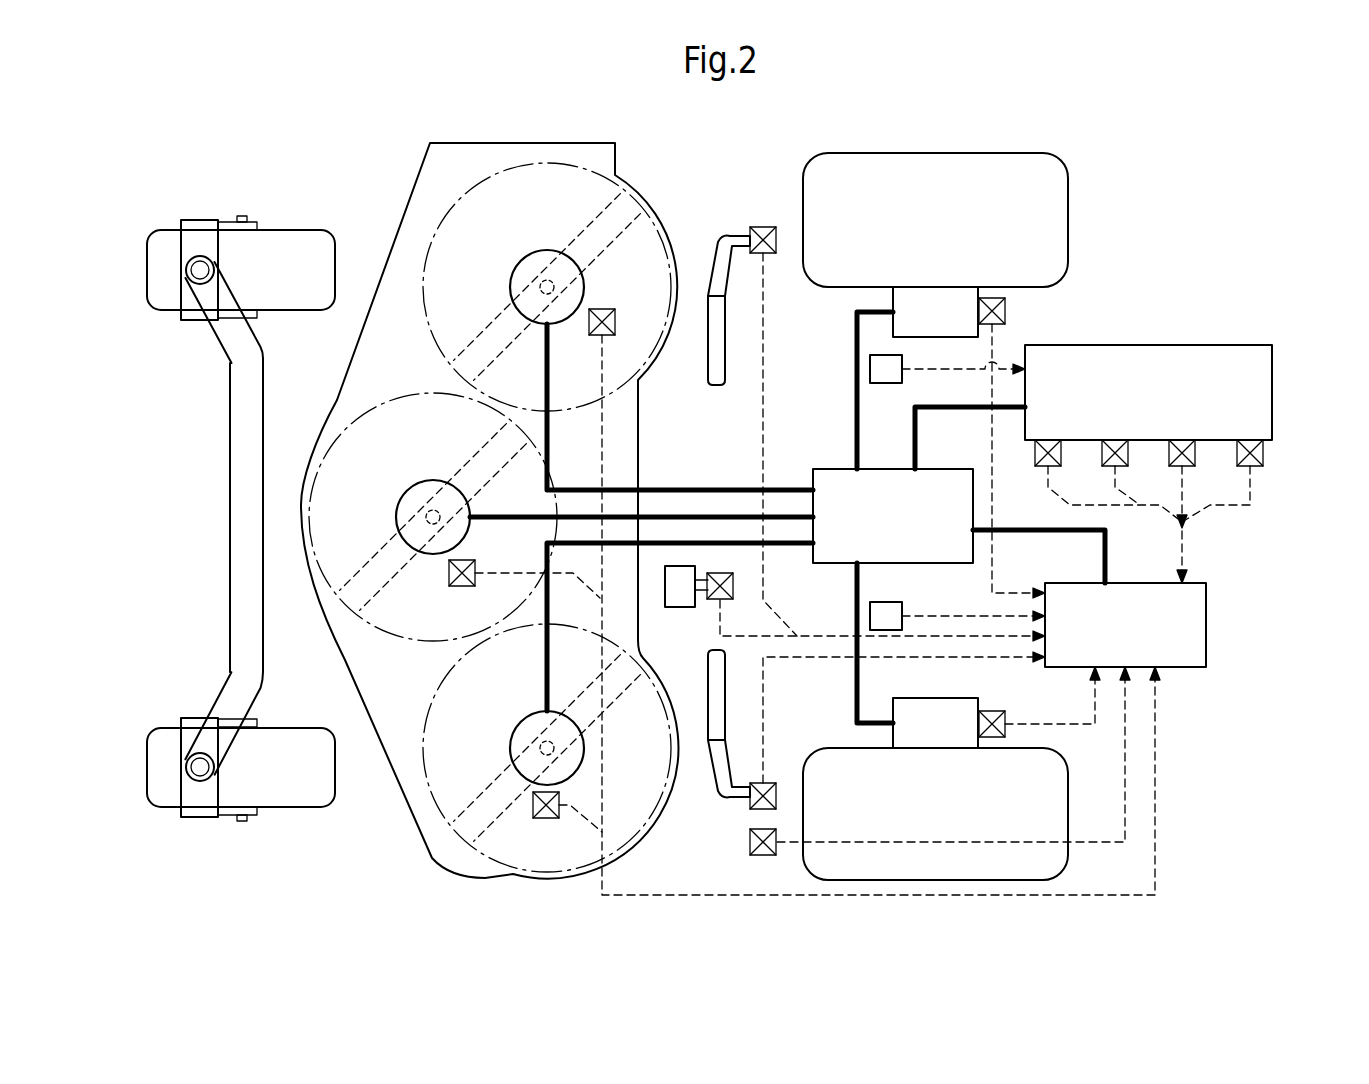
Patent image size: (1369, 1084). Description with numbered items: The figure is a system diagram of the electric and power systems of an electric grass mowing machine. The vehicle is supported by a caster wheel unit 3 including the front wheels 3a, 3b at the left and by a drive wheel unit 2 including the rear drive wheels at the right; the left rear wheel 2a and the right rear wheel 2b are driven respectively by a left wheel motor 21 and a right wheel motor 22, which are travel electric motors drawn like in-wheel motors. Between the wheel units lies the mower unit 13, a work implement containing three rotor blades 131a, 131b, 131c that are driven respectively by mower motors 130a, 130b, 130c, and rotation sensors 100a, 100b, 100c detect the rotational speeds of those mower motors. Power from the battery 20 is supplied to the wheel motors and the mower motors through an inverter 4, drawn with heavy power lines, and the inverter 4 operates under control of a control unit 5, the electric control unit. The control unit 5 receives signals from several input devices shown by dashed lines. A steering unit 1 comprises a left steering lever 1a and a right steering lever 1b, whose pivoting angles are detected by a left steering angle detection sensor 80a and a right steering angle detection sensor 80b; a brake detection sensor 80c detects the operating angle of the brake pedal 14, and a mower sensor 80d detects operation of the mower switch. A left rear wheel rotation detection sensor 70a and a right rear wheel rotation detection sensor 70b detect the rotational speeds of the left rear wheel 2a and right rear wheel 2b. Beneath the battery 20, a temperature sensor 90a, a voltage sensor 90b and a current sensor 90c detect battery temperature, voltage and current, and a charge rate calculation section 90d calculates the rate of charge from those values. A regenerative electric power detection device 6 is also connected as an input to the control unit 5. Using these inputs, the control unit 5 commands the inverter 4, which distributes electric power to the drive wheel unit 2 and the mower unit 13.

The mower unit 13 is at (403, 218).
The caster wheel unit 3 is at (241, 514).
The front wheel 3a is at (277, 795).
The front wheel 3b is at (270, 232).
The mower motor 130a is at (522, 728).
The mower motor 130b is at (430, 480).
The mower motor 130c is at (545, 251).
The rotor blade 131a is at (507, 853).
The rotor blade 131b is at (342, 593).
The rotor blade 131c is at (480, 330).
The rotation sensor 100a is at (545, 818).
The rotation sensor 100b is at (450, 578).
The rotation sensor 100c is at (615, 322).
The steering unit 1 is at (774, 517).
The left steering lever 1a is at (722, 690).
The right steering lever 1b is at (720, 350).
The drive wheel unit 2 is at (935, 516).
The left rear wheel 2a is at (934, 880).
The right rear wheel 2b is at (933, 153).
The left steering angle detection sensor 80a is at (777, 794).
The right steering angle detection sensor 80b is at (763, 226).
The brake detection sensor 80c is at (733, 586).
The mower sensor 80d is at (750, 838).
The brake pedal 14 is at (680, 608).
The right wheel motor 22 is at (893, 305).
The left wheel motor 21 is at (925, 698).
The left rear wheel rotation detection sensor 70a is at (1000, 712).
The right rear wheel rotation detection sensor 70b is at (1006, 311).
The regenerative electric power detection device 6 is at (886, 384).
The inverter 4 is at (937, 563).
The battery 20 is at (1186, 345).
The temperature sensor 90a is at (1040, 466).
The voltage sensor 90b is at (1170, 466).
The current sensor 90c is at (1100, 466).
The charge rate calculation section 90d is at (1264, 452).
The control unit 5 is at (1184, 668).